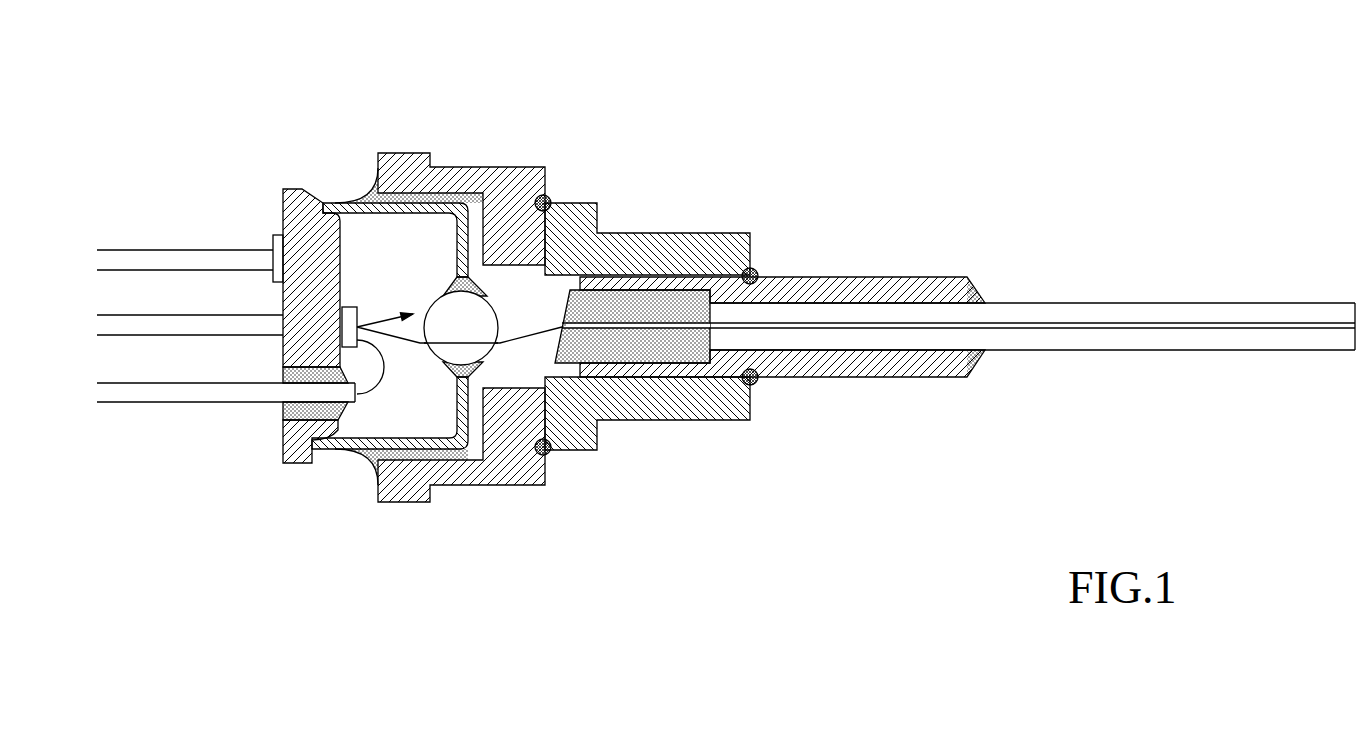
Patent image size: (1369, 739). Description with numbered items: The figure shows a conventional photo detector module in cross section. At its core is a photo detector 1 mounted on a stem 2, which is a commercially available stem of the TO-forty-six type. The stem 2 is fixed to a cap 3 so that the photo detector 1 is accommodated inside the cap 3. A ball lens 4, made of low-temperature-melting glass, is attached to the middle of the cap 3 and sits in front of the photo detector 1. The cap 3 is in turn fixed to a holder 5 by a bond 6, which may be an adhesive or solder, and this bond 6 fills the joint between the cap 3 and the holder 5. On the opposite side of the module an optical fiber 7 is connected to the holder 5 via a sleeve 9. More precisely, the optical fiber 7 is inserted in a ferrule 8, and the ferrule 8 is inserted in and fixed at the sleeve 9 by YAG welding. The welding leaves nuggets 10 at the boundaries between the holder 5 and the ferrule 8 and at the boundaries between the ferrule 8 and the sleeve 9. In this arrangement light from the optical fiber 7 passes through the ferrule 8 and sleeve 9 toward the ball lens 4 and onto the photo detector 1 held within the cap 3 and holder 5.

The photo detector 1 is at (367, 297).
The stem 2 is at (275, 472).
The cap 3 is at (323, 190).
The ball lens 4 is at (496, 289).
The holder 5 is at (444, 500).
The bond 6 is at (359, 479).
The optical fiber 7 is at (1161, 314).
The ferrule 8 is at (874, 269).
The sleeve 9 is at (702, 227).
The nuggets 10 is at (553, 463).